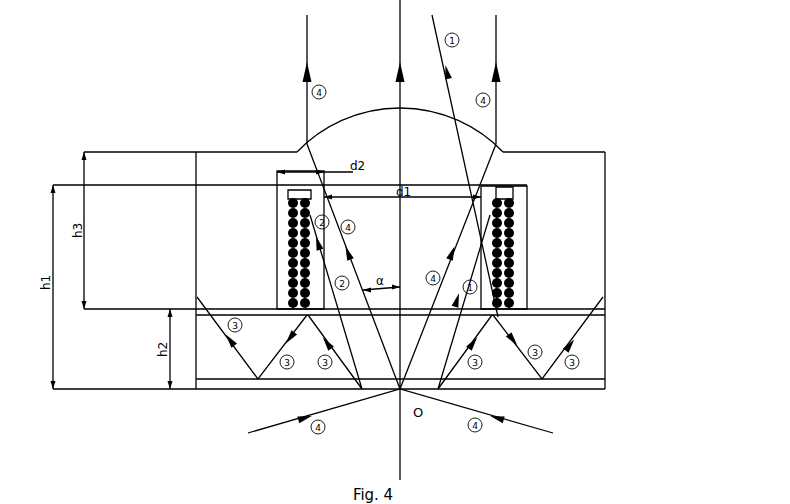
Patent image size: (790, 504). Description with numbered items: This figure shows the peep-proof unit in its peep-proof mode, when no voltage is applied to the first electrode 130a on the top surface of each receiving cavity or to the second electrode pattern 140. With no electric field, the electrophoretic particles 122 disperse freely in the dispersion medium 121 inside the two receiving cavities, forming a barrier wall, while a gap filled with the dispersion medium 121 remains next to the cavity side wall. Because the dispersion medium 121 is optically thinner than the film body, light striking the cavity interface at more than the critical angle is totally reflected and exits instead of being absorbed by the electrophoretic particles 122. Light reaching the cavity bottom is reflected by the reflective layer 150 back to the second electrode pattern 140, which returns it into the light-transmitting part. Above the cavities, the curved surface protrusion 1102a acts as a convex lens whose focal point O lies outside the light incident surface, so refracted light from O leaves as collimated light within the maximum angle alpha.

The curved surface protrusion 1102a is at (356, 116).
The first electrode 130a is at (503, 190).
The dispersion medium 121 is at (280, 267).
The electrophoretic particles 122 is at (280, 210).
The reflective layer 150 is at (517, 310).
The second electrode pattern 140 is at (573, 388).